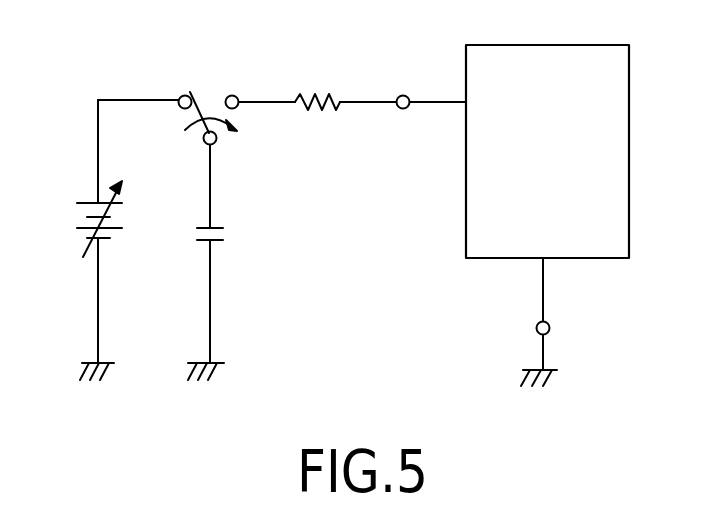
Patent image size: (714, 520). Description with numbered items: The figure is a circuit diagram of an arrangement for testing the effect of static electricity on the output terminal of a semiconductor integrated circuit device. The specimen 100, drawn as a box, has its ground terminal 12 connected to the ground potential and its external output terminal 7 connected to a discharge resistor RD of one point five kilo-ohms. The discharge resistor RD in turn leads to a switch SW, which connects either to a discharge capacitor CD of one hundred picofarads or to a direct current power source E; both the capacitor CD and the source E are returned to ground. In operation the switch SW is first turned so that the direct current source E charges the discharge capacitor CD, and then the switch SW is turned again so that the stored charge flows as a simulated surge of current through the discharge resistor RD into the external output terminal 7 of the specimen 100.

The specimen 100 is at (607, 33).
The external output terminal 7 is at (403, 109).
The ground terminal 12 is at (550, 327).
The switch SW is at (209, 100).
The discharge resistor RD is at (317, 82).
The direct current power source E is at (114, 219).
The discharge capacitor CD is at (238, 225).